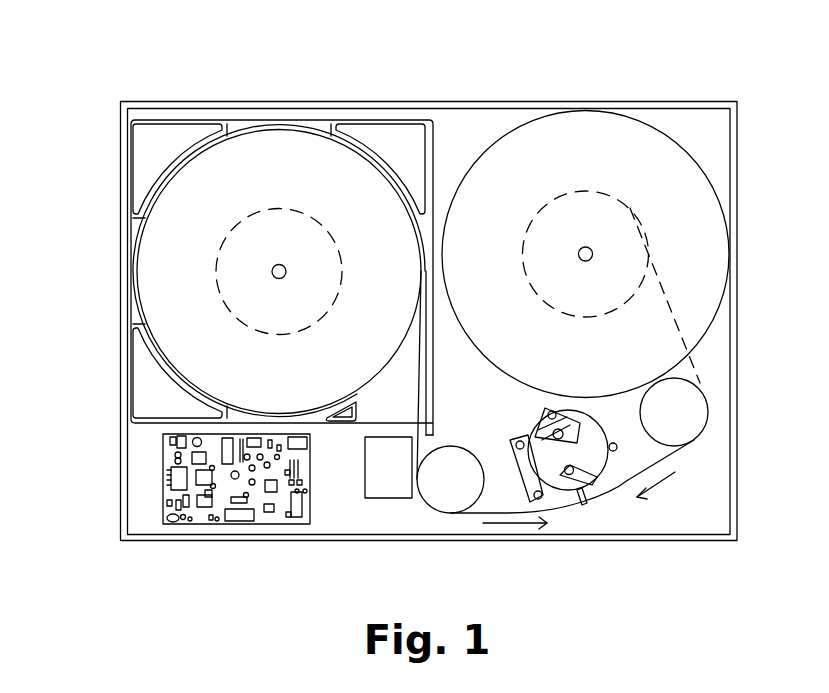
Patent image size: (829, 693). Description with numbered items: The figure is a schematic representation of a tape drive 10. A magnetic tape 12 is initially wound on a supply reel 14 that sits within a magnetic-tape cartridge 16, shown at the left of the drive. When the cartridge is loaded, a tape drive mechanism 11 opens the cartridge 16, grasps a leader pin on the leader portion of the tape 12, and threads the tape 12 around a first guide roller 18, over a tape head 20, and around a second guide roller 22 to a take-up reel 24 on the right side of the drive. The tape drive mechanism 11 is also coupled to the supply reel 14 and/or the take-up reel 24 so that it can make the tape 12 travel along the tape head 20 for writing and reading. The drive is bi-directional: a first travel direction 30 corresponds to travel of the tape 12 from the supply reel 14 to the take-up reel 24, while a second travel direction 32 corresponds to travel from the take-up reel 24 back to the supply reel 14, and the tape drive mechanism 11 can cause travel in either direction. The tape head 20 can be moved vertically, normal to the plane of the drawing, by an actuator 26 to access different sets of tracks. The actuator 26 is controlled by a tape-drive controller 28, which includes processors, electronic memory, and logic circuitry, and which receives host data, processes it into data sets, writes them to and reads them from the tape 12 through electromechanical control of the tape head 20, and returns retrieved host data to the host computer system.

The tape drive 10 is at (100, 99).
The tape drive mechanism 11 is at (368, 460).
The magnetic tape 12 is at (505, 512).
The supply reel 14 is at (260, 182).
The magnetic-tape cartridge 16 is at (143, 401).
The first guide roller 18 is at (437, 492).
The tape head 20 is at (562, 490).
The second guide roller 22 is at (694, 412).
The take-up reel 24 is at (605, 155).
The actuator 26 is at (542, 420).
The tape-drive controller 28 is at (302, 482).
The first travel direction 30 is at (531, 528).
The second travel direction 32 is at (678, 467).